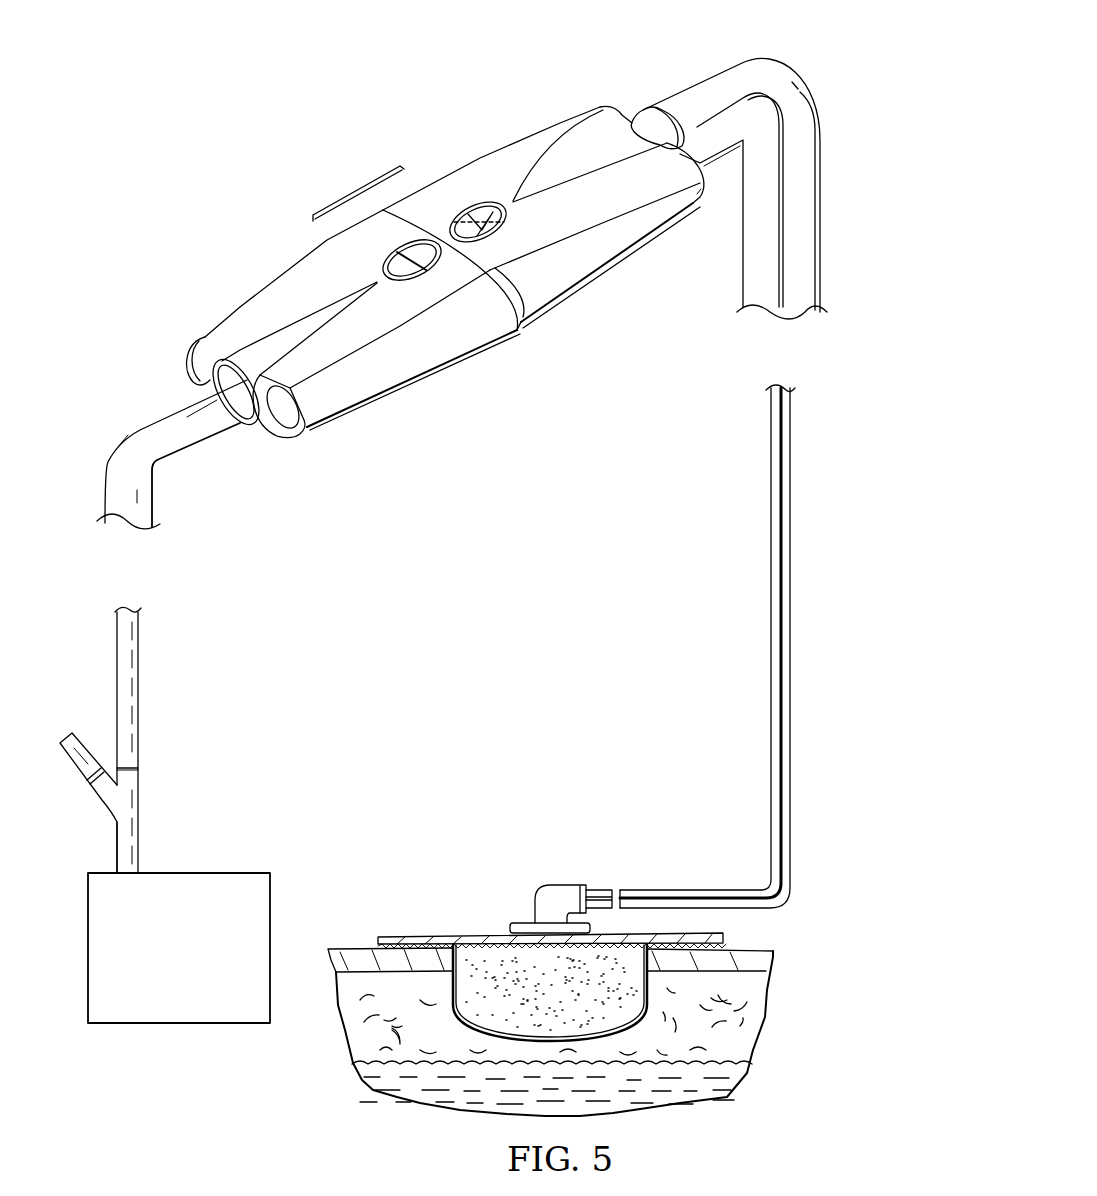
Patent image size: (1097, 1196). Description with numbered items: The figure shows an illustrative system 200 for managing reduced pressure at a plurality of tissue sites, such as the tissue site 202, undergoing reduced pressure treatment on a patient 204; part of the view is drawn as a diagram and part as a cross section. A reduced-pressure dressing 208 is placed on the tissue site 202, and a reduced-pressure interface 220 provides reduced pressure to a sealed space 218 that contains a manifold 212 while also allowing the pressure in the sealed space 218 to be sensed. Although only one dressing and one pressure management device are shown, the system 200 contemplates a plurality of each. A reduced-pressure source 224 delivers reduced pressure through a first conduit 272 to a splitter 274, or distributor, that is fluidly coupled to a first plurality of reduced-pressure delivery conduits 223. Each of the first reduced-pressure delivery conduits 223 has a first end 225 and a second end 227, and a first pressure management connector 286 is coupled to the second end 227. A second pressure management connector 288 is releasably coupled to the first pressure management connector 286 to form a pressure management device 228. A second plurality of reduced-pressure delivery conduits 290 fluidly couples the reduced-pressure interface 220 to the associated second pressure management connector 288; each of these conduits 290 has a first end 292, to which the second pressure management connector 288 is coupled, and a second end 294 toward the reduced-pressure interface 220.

The system 200 is at (219, 172).
The tissue site 202 is at (626, 1024).
The patient 204 is at (766, 1018).
The reduced-pressure dressing 208 is at (419, 928).
The manifold 212 is at (551, 993).
The sealed space 218 is at (446, 970).
The reduced-pressure interface 220 is at (544, 890).
The first plurality of reduced-pressure delivery conduits 223 is at (139, 680).
The reduced-pressure source 224 is at (234, 866).
The first end 225 is at (139, 770).
The second end 227 is at (180, 392).
The pressure management device 228 is at (352, 200).
The first conduit 272 is at (139, 864).
The splitter 274 is at (139, 784).
The first pressure management connector 286 is at (284, 282).
The second pressure management connector 288 is at (488, 160).
The second plurality of reduced-pressure delivery conduits 290 is at (778, 66).
The first end 292 is at (657, 100).
The second end 294 is at (600, 890).